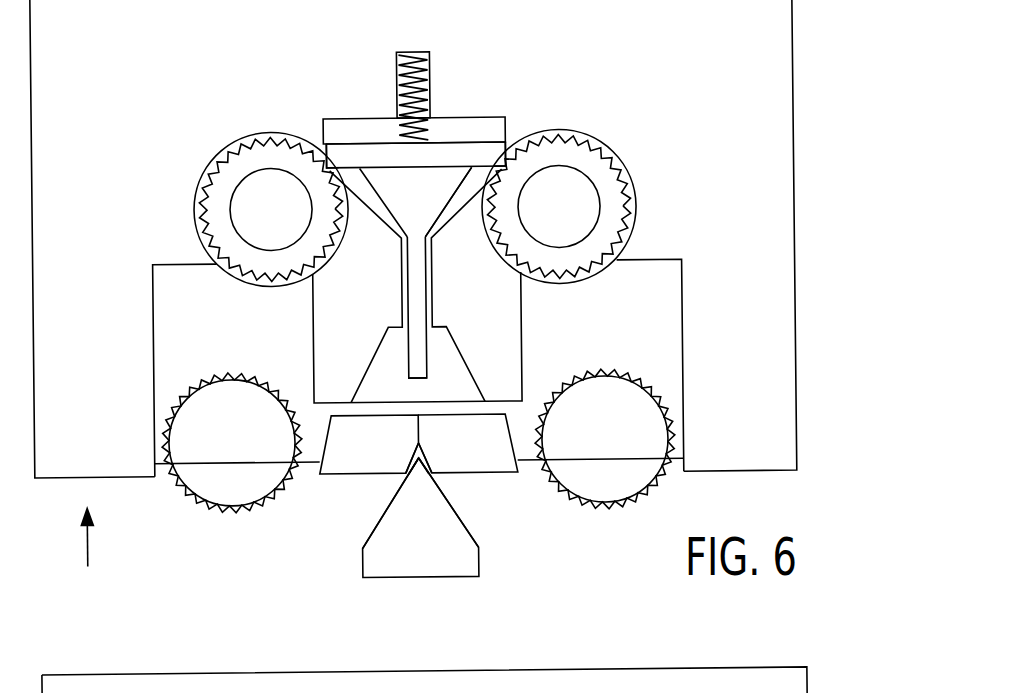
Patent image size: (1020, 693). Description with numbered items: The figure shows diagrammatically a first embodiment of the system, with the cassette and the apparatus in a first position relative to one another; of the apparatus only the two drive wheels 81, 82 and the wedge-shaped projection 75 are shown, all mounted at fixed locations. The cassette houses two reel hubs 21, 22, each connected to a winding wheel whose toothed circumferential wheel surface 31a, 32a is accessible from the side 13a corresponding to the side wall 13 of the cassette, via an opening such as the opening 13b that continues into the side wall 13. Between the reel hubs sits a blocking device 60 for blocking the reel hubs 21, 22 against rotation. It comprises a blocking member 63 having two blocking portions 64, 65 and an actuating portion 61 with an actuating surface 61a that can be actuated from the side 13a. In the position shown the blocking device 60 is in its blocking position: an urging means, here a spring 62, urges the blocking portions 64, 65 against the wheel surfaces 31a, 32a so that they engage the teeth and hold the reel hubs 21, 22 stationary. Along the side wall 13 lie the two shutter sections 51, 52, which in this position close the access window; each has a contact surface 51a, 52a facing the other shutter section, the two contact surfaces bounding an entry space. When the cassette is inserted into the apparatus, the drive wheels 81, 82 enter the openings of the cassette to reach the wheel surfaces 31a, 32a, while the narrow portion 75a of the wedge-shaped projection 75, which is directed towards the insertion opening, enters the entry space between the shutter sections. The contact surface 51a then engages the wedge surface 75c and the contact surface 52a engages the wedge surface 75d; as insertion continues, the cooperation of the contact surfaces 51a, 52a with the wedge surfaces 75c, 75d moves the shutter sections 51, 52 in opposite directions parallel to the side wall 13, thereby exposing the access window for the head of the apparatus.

The side wall 13 is at (738, 472).
The side 13a is at (88, 554).
The opening 13b is at (683, 320).
The reel hub 21 is at (230, 210).
The reel hub 22 is at (601, 206).
The wheel surface 31a is at (205, 167).
The wheel surface 32a is at (623, 163).
The shutter section 51 is at (328, 475).
The contact surface 51a is at (410, 457).
The shutter section 52 is at (513, 473).
The contact surface 52a is at (432, 457).
The blocking device 60 is at (333, 103).
The actuating portion 61 is at (427, 350).
The actuating surface 61a is at (418, 381).
The spring 62 is at (427, 71).
The blocking member 63 is at (443, 212).
The blocking portion 64 is at (326, 146).
The blocking portion 65 is at (508, 145).
The wedge-shaped projection 75 is at (450, 565).
The narrow portion 75a is at (418, 484).
The wedge surface 75c is at (368, 537).
The wedge surface 75d is at (475, 537).
The drive wheel 81 is at (232, 511).
The drive wheel 82 is at (606, 509).